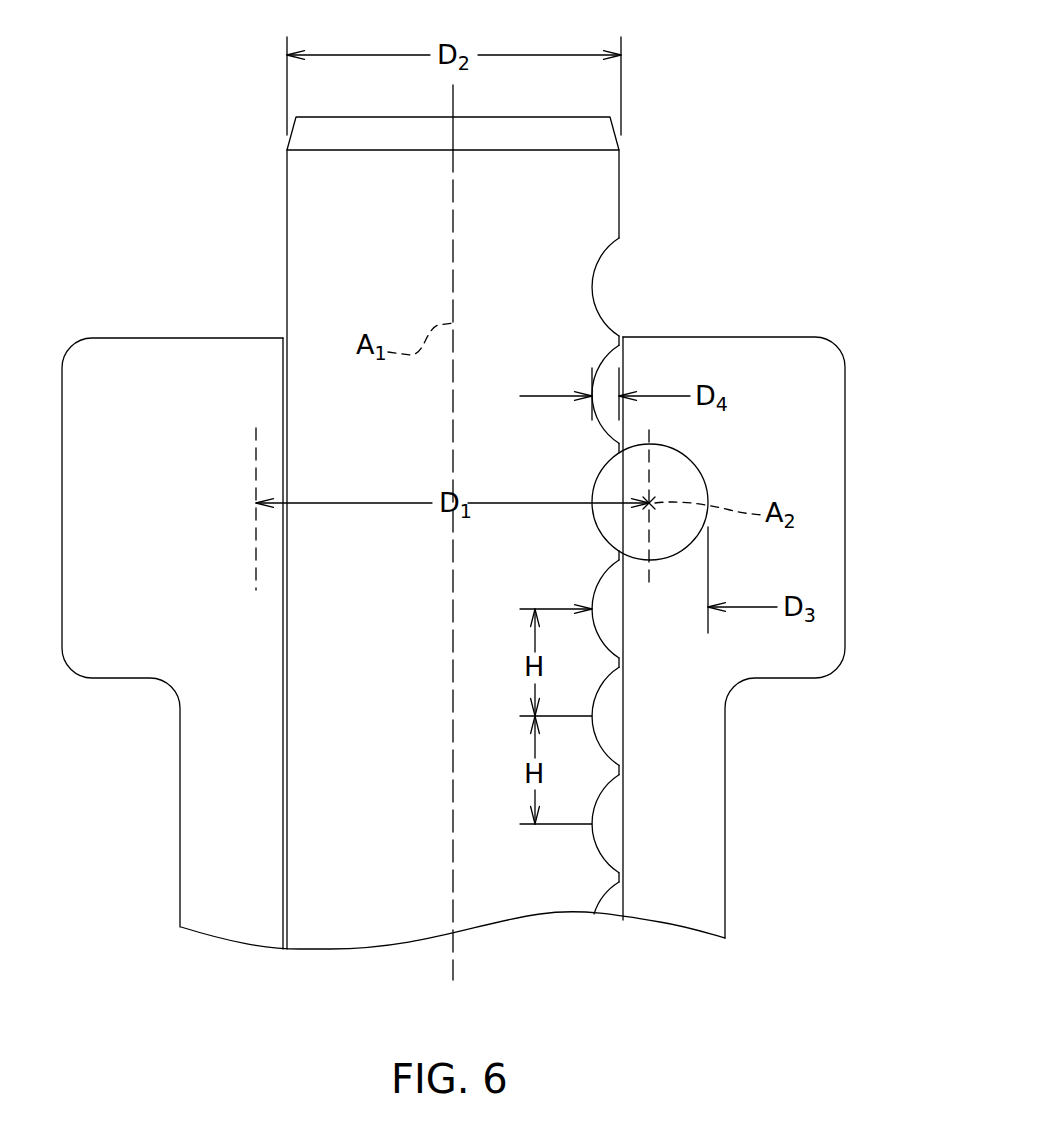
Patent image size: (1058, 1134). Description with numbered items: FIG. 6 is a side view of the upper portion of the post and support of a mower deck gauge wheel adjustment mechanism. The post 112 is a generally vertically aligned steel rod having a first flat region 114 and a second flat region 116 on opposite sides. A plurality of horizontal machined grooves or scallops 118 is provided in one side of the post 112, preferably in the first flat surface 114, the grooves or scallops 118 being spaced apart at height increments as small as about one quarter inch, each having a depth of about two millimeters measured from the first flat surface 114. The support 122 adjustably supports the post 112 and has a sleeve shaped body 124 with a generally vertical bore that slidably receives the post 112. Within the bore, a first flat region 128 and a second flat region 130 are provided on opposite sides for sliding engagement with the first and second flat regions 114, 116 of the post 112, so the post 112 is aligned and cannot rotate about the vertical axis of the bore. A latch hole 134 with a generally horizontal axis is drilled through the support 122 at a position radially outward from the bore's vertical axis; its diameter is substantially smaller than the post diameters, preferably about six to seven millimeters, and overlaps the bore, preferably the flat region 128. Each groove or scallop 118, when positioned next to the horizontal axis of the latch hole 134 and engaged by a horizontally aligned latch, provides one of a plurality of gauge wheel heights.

The post 112 is at (216, 57).
The first flat region 114 is at (619, 210).
The second flat region 116 is at (287, 237).
The grooves or scallops 118 is at (600, 690).
The support 122 is at (886, 278).
The sleeve shaped body 124 is at (845, 497).
The first flat region of bore 128 is at (606, 358).
The second flat region of bore 130 is at (285, 416).
The latch hole 134 is at (680, 452).